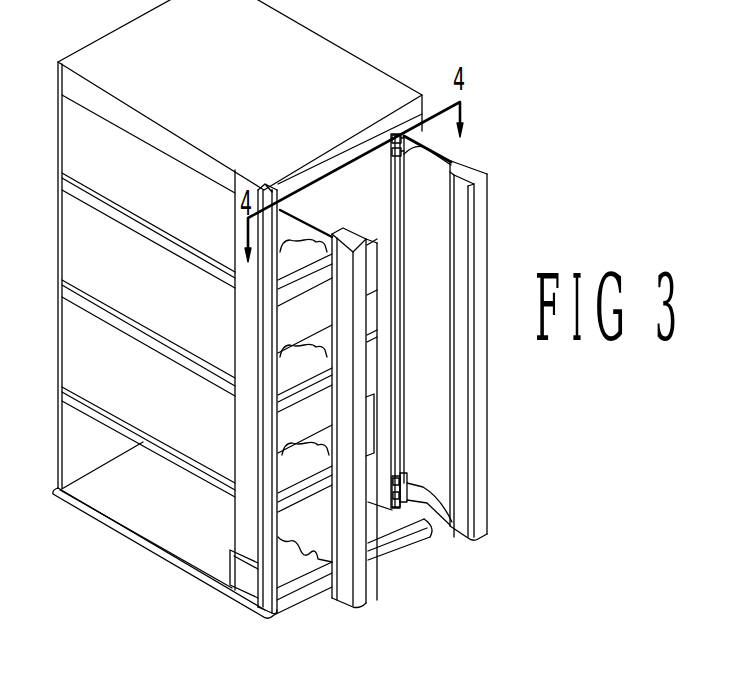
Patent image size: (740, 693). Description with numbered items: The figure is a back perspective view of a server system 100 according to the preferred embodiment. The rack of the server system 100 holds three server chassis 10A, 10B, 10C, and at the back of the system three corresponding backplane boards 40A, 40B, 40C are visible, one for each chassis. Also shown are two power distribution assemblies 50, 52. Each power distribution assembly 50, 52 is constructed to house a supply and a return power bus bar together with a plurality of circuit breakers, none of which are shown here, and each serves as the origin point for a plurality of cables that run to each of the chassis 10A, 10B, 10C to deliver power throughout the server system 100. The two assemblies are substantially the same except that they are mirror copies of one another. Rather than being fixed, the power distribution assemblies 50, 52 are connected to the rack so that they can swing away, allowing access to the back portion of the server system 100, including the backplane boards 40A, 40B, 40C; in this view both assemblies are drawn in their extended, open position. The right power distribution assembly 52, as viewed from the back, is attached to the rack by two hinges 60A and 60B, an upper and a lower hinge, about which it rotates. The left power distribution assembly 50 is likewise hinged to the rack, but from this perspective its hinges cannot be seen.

The server system 100 is at (239, 104).
The chassis 10A is at (168, 200).
The chassis 10B is at (171, 307).
The chassis 10C is at (172, 424).
The backplane board 40A is at (305, 274).
The backplane board 40B is at (305, 376).
The backplane board 40C is at (309, 477).
The power distribution assembly 50 is at (356, 607).
The power distribution assembly 52 is at (480, 540).
The hinge 60A is at (392, 142).
The hinge 60B is at (389, 500).